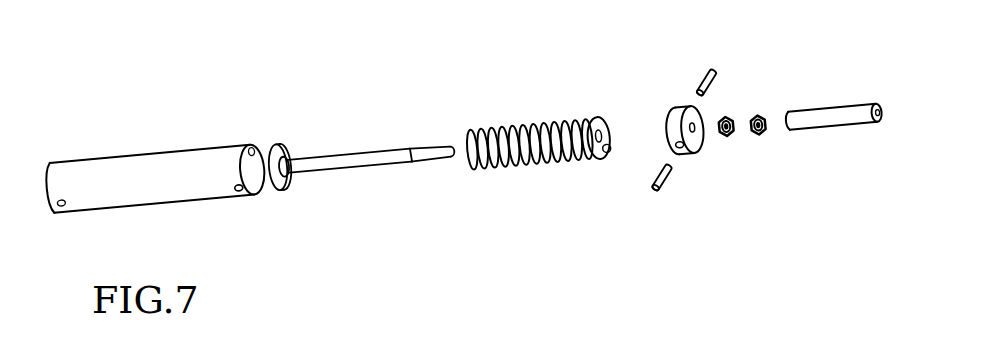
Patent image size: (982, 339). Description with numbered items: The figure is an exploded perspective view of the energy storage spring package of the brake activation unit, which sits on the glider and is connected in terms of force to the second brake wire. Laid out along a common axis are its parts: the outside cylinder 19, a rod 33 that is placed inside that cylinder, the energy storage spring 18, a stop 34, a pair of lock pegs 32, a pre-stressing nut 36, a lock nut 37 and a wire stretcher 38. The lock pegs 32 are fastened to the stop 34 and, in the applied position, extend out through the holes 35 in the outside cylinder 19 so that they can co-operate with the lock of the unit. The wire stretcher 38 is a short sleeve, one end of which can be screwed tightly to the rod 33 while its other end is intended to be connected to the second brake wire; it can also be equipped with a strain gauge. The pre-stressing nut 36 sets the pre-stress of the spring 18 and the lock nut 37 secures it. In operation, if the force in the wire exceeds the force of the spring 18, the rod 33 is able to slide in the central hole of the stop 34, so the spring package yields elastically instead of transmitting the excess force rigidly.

The outside cylinder 19 is at (150, 160).
The holes 35 is at (237, 192).
The rod 33 is at (363, 157).
The energy storage spring 18 is at (512, 119).
The lock pegs 32 is at (698, 88).
The stop 34 is at (695, 140).
The pre-stressing nut 36 is at (728, 115).
The lock nut 37 is at (766, 128).
The wire stretcher 38 is at (825, 112).